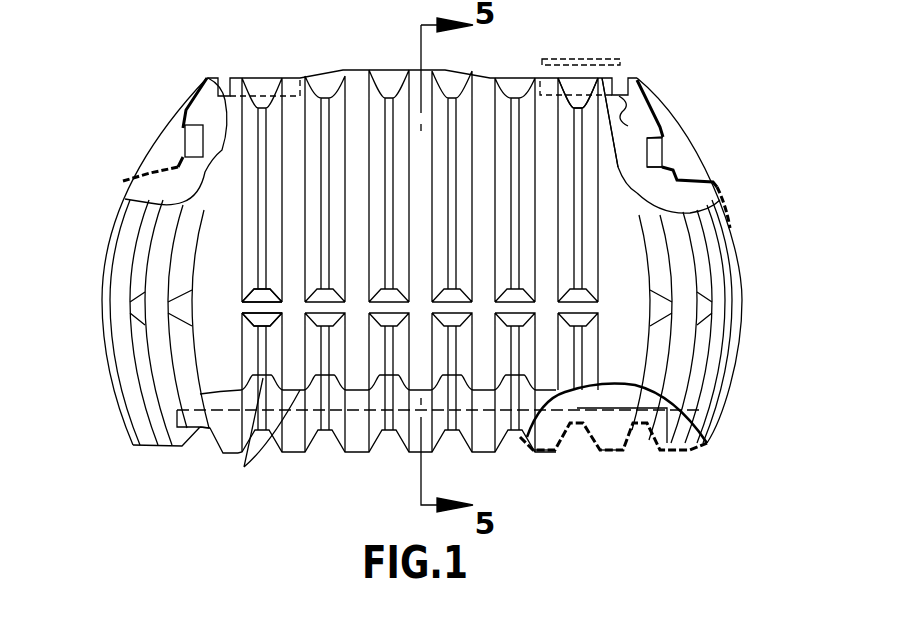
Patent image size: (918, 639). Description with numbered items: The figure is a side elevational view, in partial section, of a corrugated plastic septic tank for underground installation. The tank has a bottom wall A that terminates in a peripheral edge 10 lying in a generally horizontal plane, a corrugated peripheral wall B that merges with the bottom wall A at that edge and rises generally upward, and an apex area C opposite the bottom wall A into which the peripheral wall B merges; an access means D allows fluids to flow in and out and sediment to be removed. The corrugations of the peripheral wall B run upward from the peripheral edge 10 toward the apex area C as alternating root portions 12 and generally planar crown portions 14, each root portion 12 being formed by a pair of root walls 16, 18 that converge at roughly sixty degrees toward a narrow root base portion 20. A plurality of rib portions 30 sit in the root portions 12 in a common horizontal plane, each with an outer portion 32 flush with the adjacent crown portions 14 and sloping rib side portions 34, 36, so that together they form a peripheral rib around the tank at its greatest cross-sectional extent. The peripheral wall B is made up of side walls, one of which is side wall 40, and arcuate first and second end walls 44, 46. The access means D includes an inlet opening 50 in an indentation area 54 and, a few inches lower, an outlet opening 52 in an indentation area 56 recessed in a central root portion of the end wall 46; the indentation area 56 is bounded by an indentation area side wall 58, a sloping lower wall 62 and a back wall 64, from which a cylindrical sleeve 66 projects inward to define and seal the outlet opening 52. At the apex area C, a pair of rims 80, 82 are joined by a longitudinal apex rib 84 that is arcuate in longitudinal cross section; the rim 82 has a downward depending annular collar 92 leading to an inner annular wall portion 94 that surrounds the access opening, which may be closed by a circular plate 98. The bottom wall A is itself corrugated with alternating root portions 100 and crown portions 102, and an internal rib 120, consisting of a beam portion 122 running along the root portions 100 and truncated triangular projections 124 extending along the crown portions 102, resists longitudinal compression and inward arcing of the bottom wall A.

The peripheral edge 10 is at (133, 443).
The root portions 12 is at (393, 374).
The crown portions 14 is at (418, 380).
The root wall 16 is at (275, 395).
The root wall 18 is at (525, 352).
The root base portion 20 is at (513, 343).
The rib portions 30 is at (277, 290).
The outer portion 32 is at (250, 307).
The rib side portion 34 is at (263, 297).
The rib side portion 36 is at (263, 317).
The side wall 40 is at (430, 115).
The first end wall 44 is at (97, 213).
The second end wall 46 is at (750, 297).
The inlet opening 50 is at (187, 140).
The outlet opening 52 is at (665, 155).
The indentation area 54 is at (180, 112).
The indentation area 56 is at (657, 93).
The indentation area side wall 58 is at (673, 132).
The sloping lower wall 62 is at (690, 173).
The back wall 64 is at (652, 112).
The cylindrical sleeve 66 is at (660, 165).
The rim 80 is at (306, 88).
The rim 82 is at (628, 77).
The apex rib 84 is at (400, 68).
The annular collar 92 is at (605, 92).
The annular wall portion 94 is at (631, 116).
The circular plate 98 is at (577, 58).
The root portions 100 is at (633, 430).
The crown portions 102 is at (548, 452).
The internal rib 120 is at (657, 420).
The beam portion 122 is at (588, 418).
The truncated triangular projections 124 is at (622, 438).
The bottom wall A is at (207, 435).
The peripheral wall B is at (253, 118).
The apex area C is at (498, 62).
The access means D is at (132, 108).